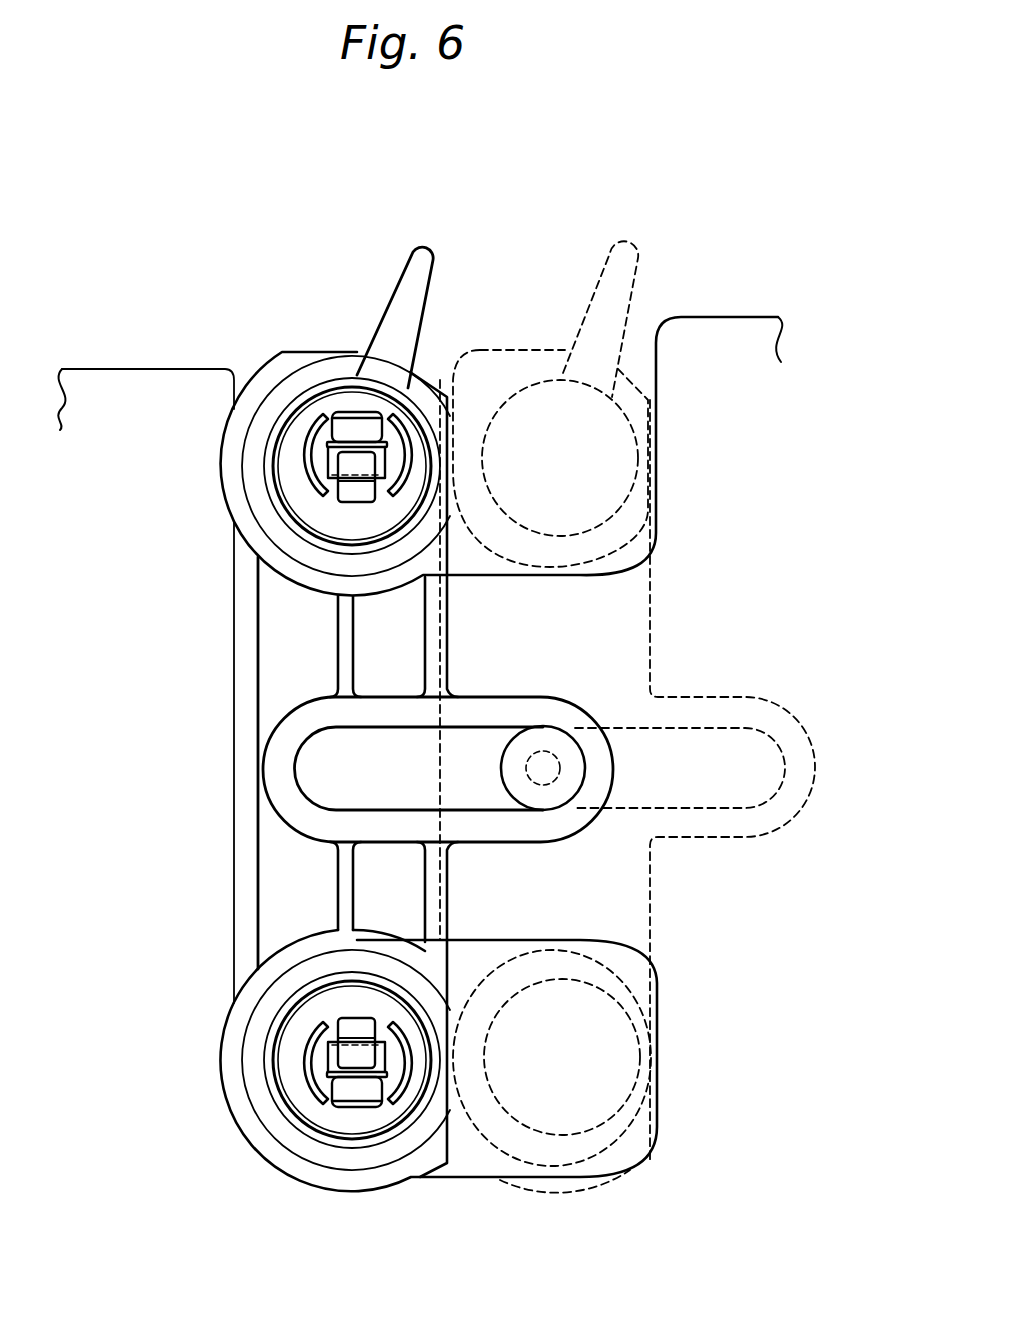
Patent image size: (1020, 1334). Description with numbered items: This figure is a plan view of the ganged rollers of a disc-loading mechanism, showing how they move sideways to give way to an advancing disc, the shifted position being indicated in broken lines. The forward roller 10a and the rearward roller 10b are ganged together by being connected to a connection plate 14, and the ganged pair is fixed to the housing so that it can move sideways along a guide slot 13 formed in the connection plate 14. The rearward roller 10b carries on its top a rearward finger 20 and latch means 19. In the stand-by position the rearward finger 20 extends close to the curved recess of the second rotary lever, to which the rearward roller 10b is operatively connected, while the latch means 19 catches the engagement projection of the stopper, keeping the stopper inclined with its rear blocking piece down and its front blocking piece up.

The forward roller 10a is at (316, 1110).
The rearward roller 10b is at (292, 458).
The guide slot 13 is at (312, 780).
The connection plate 14 is at (280, 675).
The latch means 19 is at (347, 423).
The rearward finger 20 is at (424, 247).